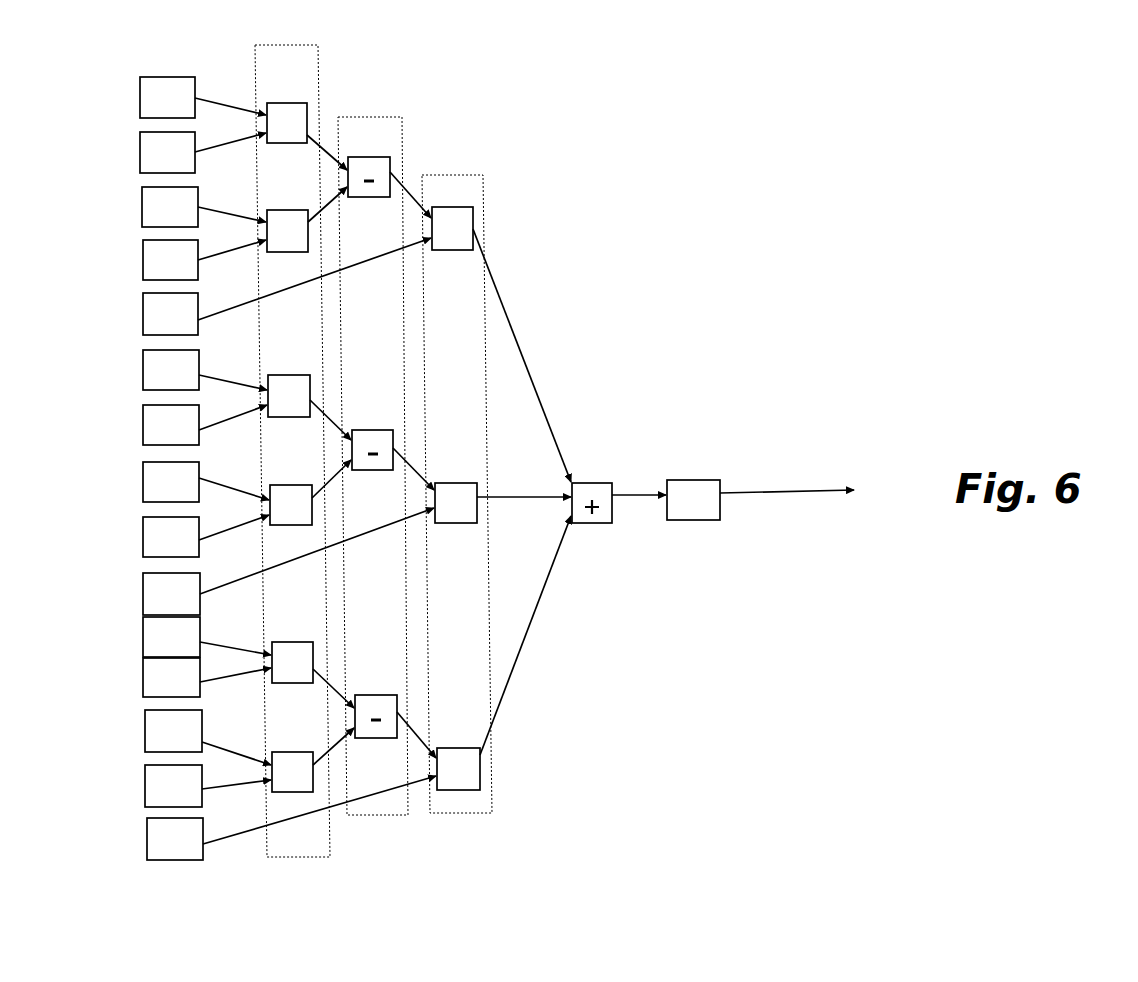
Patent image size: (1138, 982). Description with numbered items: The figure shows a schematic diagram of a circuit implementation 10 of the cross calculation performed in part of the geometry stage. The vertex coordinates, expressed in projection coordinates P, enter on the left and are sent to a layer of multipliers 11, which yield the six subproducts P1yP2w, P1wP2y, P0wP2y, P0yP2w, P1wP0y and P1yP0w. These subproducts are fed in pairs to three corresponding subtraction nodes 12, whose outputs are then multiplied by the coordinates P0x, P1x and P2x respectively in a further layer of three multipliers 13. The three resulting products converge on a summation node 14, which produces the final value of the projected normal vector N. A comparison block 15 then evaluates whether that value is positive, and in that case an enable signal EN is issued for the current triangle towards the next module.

The collision detection circuit 10 is at (643, 249).
The layer of multipliers 11 is at (297, 53).
The subtraction nodes 12 is at (371, 116).
The further layer of three multipliers 13 is at (463, 175).
The summation node 14 is at (600, 495).
The comparison block 15 is at (701, 510).